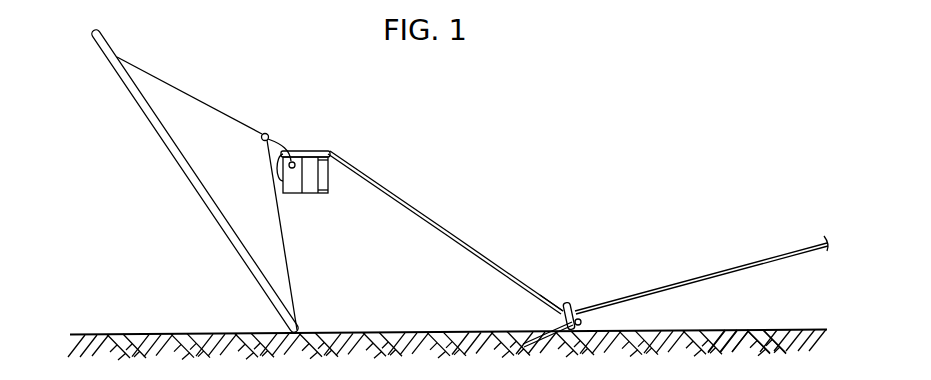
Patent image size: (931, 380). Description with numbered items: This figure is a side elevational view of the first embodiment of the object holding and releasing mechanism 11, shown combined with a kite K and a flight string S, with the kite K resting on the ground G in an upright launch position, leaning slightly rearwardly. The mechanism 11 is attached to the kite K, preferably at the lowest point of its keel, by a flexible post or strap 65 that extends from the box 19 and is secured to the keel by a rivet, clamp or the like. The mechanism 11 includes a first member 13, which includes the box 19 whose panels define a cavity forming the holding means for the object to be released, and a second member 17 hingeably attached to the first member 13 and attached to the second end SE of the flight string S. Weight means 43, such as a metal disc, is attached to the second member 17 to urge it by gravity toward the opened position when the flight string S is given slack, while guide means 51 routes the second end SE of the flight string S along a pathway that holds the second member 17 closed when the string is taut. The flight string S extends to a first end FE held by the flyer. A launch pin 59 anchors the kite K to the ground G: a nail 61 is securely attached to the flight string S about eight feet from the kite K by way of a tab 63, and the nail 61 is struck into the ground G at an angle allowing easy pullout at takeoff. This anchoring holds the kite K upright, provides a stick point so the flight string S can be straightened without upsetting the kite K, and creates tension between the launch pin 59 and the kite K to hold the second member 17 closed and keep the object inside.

The kite K is at (205, 97).
The flexible post or strap 65 is at (269, 134).
The second member 17 is at (292, 196).
The object holding and releasing mechanism 11 is at (313, 213).
The weight means 43 is at (299, 151).
The first member 13 is at (318, 195).
The box 19 is at (326, 181).
The guide means 51 is at (343, 147).
The second end SE is at (366, 169).
The tab 63 is at (578, 287).
The launch pin 59 is at (553, 312).
The nail 61 is at (560, 325).
The flight string S is at (674, 285).
The first end FE is at (826, 241).
The ground G is at (730, 329).